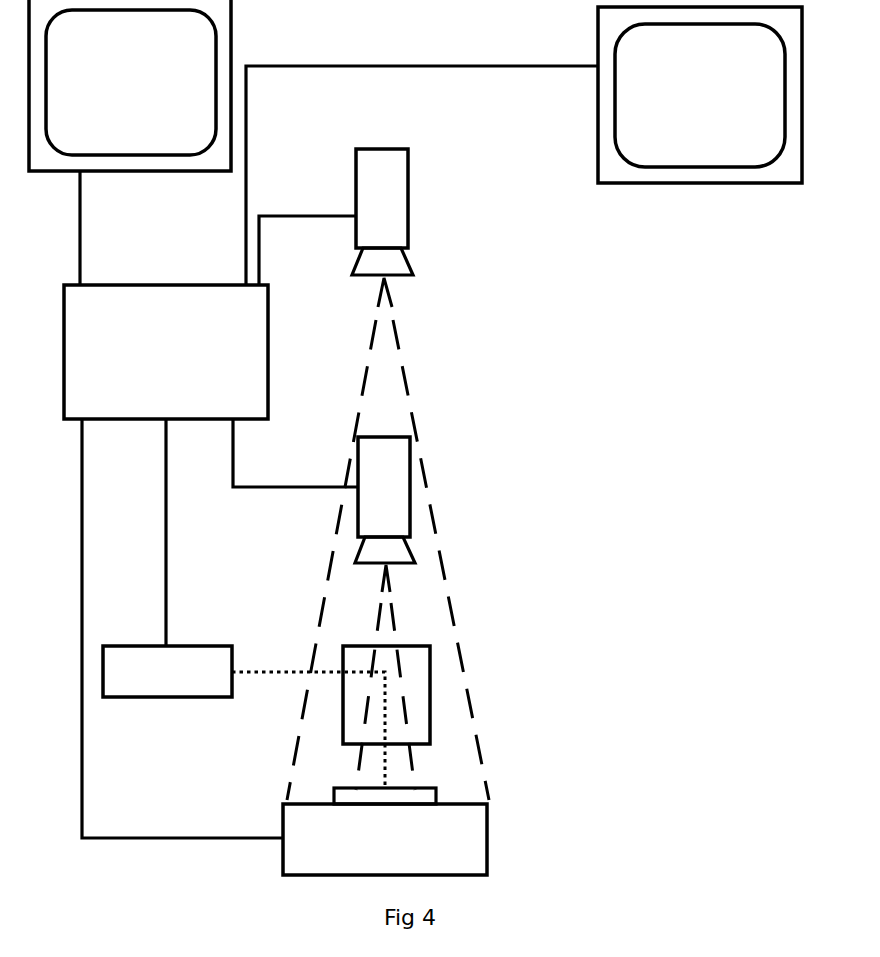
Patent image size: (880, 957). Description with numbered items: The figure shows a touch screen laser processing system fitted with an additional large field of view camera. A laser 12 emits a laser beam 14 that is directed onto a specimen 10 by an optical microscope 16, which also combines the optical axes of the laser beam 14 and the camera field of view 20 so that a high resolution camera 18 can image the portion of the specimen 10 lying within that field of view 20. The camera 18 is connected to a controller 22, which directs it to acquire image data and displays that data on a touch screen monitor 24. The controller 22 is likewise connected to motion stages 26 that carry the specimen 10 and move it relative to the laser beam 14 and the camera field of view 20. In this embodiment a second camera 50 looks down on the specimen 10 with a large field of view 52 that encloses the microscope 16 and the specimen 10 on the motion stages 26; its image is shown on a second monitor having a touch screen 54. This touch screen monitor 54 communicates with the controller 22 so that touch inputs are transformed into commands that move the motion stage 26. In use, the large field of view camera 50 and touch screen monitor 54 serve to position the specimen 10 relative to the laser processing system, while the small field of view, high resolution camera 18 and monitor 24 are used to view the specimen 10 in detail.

The specimen 10 is at (437, 797).
The laser 12 is at (167, 697).
The laser beam 14 is at (300, 668).
The optical microscope 16 is at (430, 687).
The camera 18 is at (410, 487).
The camera field of view 20 is at (397, 633).
The controller 22 is at (166, 352).
The touch screen monitor 24 is at (130, 85).
The motion stages 26 is at (385, 839).
The second camera 50 is at (408, 175).
The large field of view 52 is at (397, 333).
The touch screen monitor 54 is at (700, 95).